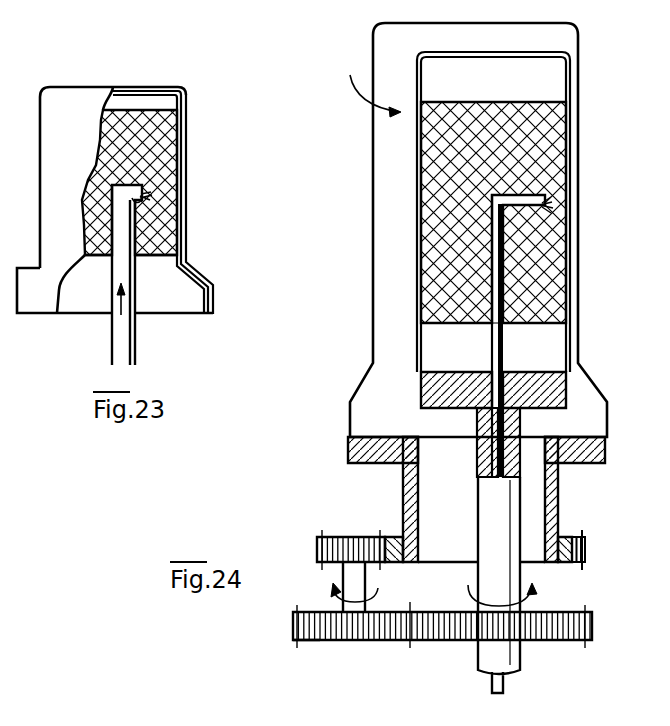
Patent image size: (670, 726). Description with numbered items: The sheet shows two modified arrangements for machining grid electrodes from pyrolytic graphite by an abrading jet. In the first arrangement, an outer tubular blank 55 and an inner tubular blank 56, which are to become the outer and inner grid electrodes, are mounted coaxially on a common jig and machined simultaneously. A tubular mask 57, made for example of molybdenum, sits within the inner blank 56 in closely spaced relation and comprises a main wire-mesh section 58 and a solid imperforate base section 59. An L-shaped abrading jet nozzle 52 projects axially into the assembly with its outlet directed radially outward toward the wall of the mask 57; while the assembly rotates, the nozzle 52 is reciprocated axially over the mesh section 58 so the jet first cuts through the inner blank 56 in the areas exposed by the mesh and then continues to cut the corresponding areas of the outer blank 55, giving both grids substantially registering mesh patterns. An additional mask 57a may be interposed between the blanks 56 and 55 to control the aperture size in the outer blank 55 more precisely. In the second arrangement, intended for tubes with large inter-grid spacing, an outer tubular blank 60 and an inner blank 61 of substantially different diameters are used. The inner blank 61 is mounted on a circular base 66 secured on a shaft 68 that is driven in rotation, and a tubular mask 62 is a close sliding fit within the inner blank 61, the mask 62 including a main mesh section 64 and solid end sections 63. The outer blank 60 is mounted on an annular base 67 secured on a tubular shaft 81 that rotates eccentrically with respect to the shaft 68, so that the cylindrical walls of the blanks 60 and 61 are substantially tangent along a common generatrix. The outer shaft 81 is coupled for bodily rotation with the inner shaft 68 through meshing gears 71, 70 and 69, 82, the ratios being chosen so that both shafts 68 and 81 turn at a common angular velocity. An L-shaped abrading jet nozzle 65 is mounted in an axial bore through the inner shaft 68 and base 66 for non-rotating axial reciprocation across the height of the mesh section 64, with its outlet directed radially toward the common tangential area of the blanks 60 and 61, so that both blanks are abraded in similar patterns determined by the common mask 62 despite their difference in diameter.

In FIG. 23, the L-shaped abrading jet nozzle 52 is at (133, 327).
In FIG. 23, the outer tubular blank 55 is at (87, 87).
In FIG. 23, the inner tubular blank 56 is at (177, 88).
In FIG. 23, the tubular mask 57 is at (232, 254).
In FIG. 23, the additional mask 57a is at (160, 198).
In FIG. 23, the main wire-mesh section 58 is at (160, 133).
In FIG. 23, the solid imperforate base section 59 is at (189, 305).
In FIG. 24, the outer tubular blank 60 is at (579, 30).
In FIG. 24, the inner blank 61 is at (570, 56).
In FIG. 24, the tubular mask 62 is at (552, 99).
In FIG. 24, the solid end sections 63 is at (562, 83).
In FIG. 24, the main mesh section 64 is at (555, 165).
In FIG. 24, the L-shaped abrading jet nozzle 65 is at (555, 215).
In FIG. 24, the circular base 66 is at (565, 389).
In FIG. 24, the annular base 67 is at (605, 450).
In FIG. 24, the inner shaft 68 is at (510, 497).
In FIG. 24, the gear 69 is at (335, 537).
In FIG. 24, the gear 70 is at (314, 641).
In FIG. 24, the gear 71 is at (593, 622).
In FIG. 24, the tubular shaft 81 is at (404, 490).
In FIG. 24, the gear 82 is at (560, 565).